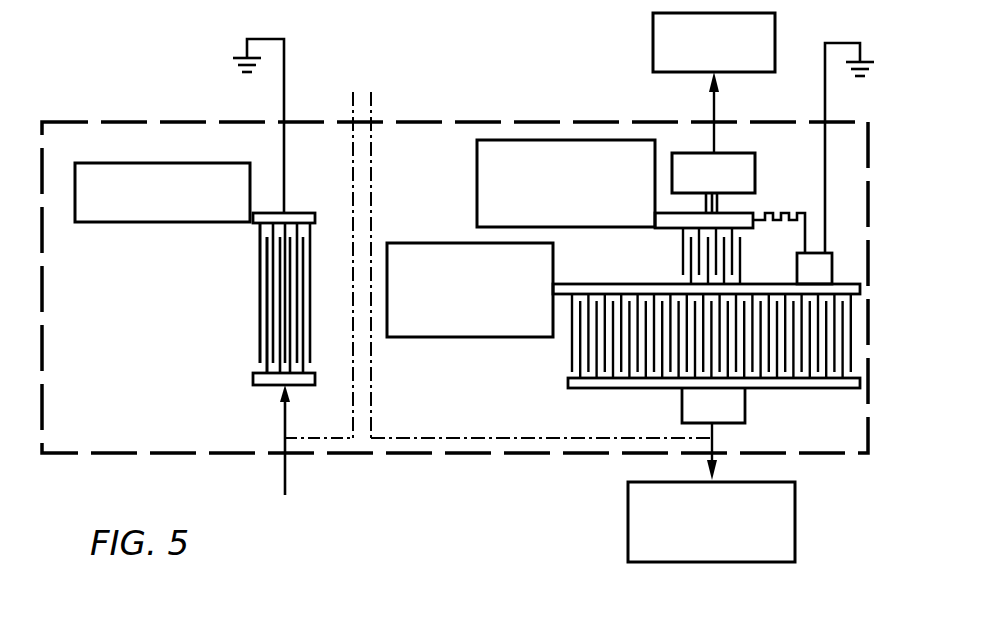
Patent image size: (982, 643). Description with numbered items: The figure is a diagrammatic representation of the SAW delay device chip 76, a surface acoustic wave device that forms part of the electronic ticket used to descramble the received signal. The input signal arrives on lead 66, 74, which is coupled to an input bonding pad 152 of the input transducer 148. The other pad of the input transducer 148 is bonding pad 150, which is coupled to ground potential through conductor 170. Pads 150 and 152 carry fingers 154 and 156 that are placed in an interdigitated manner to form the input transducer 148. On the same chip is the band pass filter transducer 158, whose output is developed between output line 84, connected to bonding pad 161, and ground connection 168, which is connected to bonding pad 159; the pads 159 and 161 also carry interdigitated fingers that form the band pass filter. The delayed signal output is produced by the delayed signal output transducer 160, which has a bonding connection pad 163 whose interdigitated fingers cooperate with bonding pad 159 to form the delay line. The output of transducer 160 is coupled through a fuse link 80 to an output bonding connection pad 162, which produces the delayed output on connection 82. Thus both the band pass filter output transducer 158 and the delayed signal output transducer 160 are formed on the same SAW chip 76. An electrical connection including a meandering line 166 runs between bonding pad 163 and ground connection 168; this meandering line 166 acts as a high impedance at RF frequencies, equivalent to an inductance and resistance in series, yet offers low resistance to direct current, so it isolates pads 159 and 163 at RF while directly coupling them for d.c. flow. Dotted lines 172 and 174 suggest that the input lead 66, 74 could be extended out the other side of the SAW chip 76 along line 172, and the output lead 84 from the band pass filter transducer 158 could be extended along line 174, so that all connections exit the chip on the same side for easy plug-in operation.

The SAW delay device chip 76 is at (521, 121).
The input transducer 148 is at (220, 188).
The bonding pad 150 is at (300, 213).
The input bonding pad 152 is at (300, 385).
The fingers 154 is at (260, 280).
The fingers 156 is at (267, 365).
The band pass filter transducer 158 is at (544, 267).
The bonding pad 159 is at (605, 267).
The delayed signal output transducer 160 is at (644, 174).
The bonding pad 161 is at (592, 388).
The output bonding connection pad 162 is at (730, 183).
The bonding connection pad 163 is at (676, 230).
The meandering line 166 is at (782, 232).
The ground connection 168 is at (825, 82).
The conductor 170 is at (284, 72).
The dotted line 172 is at (353, 100).
The dotted line 174 is at (371, 113).
The fuse link 80 is at (719, 200).
The connection 82 is at (710, 100).
The output line 84 is at (712, 445).
The lead 66 is at (251, 450).
The lead 74 is at (285, 470).